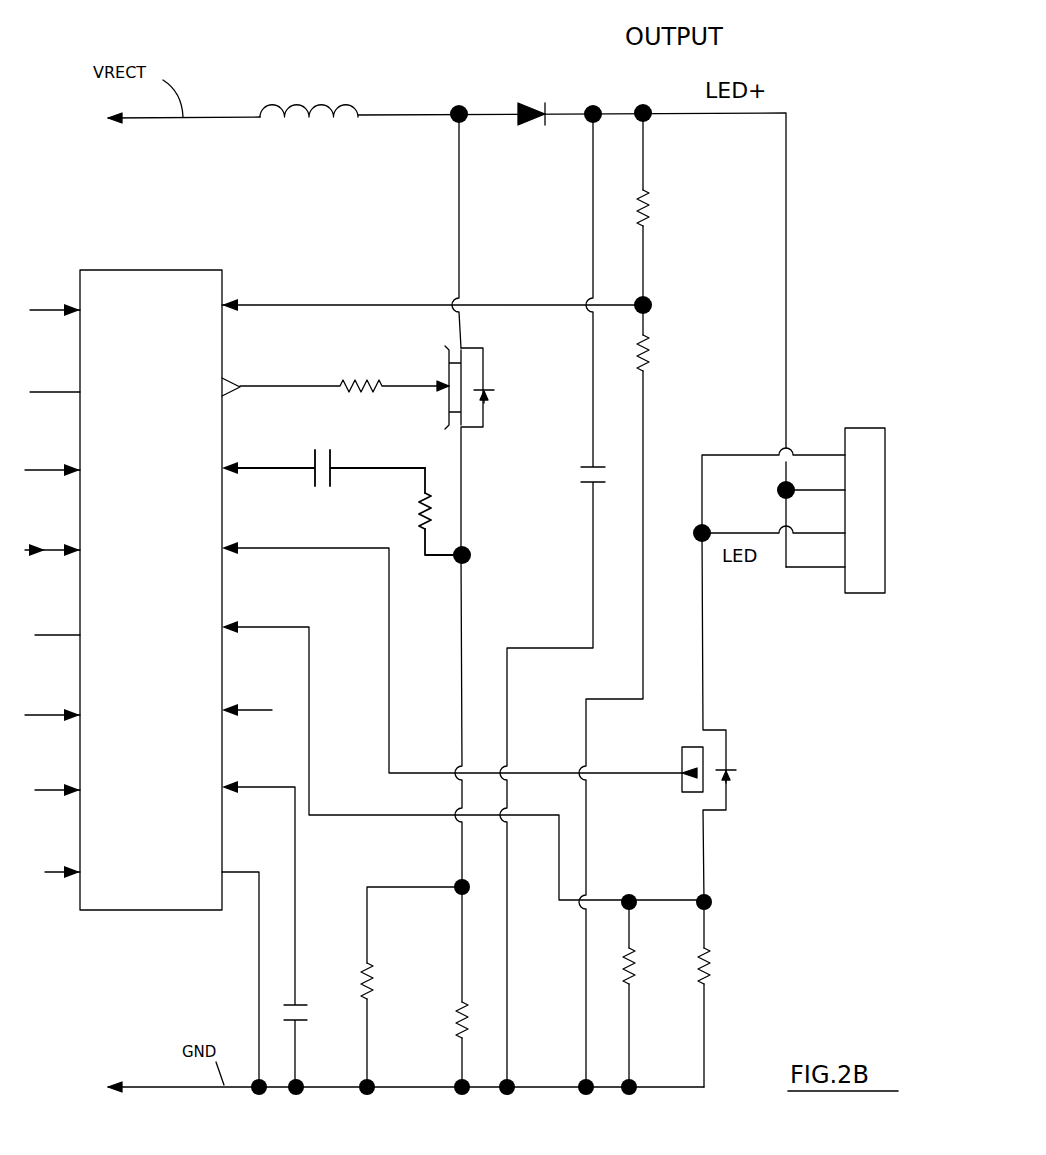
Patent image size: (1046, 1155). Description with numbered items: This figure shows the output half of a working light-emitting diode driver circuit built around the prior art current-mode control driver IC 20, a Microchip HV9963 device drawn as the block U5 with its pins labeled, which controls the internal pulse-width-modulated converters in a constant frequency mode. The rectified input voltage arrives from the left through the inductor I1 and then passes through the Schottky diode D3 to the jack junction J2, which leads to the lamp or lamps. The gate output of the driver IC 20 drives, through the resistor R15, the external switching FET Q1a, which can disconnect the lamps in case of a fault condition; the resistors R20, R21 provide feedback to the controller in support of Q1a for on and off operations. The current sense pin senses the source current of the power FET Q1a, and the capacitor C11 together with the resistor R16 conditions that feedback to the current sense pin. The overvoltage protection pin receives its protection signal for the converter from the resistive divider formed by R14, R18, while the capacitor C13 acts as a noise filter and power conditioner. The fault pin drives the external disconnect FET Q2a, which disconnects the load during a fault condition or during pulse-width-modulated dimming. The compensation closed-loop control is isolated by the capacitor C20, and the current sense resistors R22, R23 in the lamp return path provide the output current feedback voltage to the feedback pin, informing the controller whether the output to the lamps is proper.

The LED IC driver 20 is at (183, 912).
The controller integrated circuit U5 is at (157, 593).
The inductor I1 is at (309, 100).
The Schottky diode D3 is at (530, 101).
The resistor R14 is at (662, 209).
The resistor R18 is at (639, 696).
The gate resistor R15 is at (344, 375).
The switching FET Q1a is at (486, 400).
The capacitor C11 is at (330, 453).
The resistor R16 is at (415, 511).
The capacitor C13 is at (552, 600).
The jack junction J2 is at (862, 595).
The external disconnect FET Q2a is at (728, 776).
The capacitor C20 is at (283, 937).
The resistor R20 is at (411, 987).
The resistor R21 is at (479, 987).
The current sense resistor R22 is at (647, 994).
The current sense resistor R23 is at (722, 994).